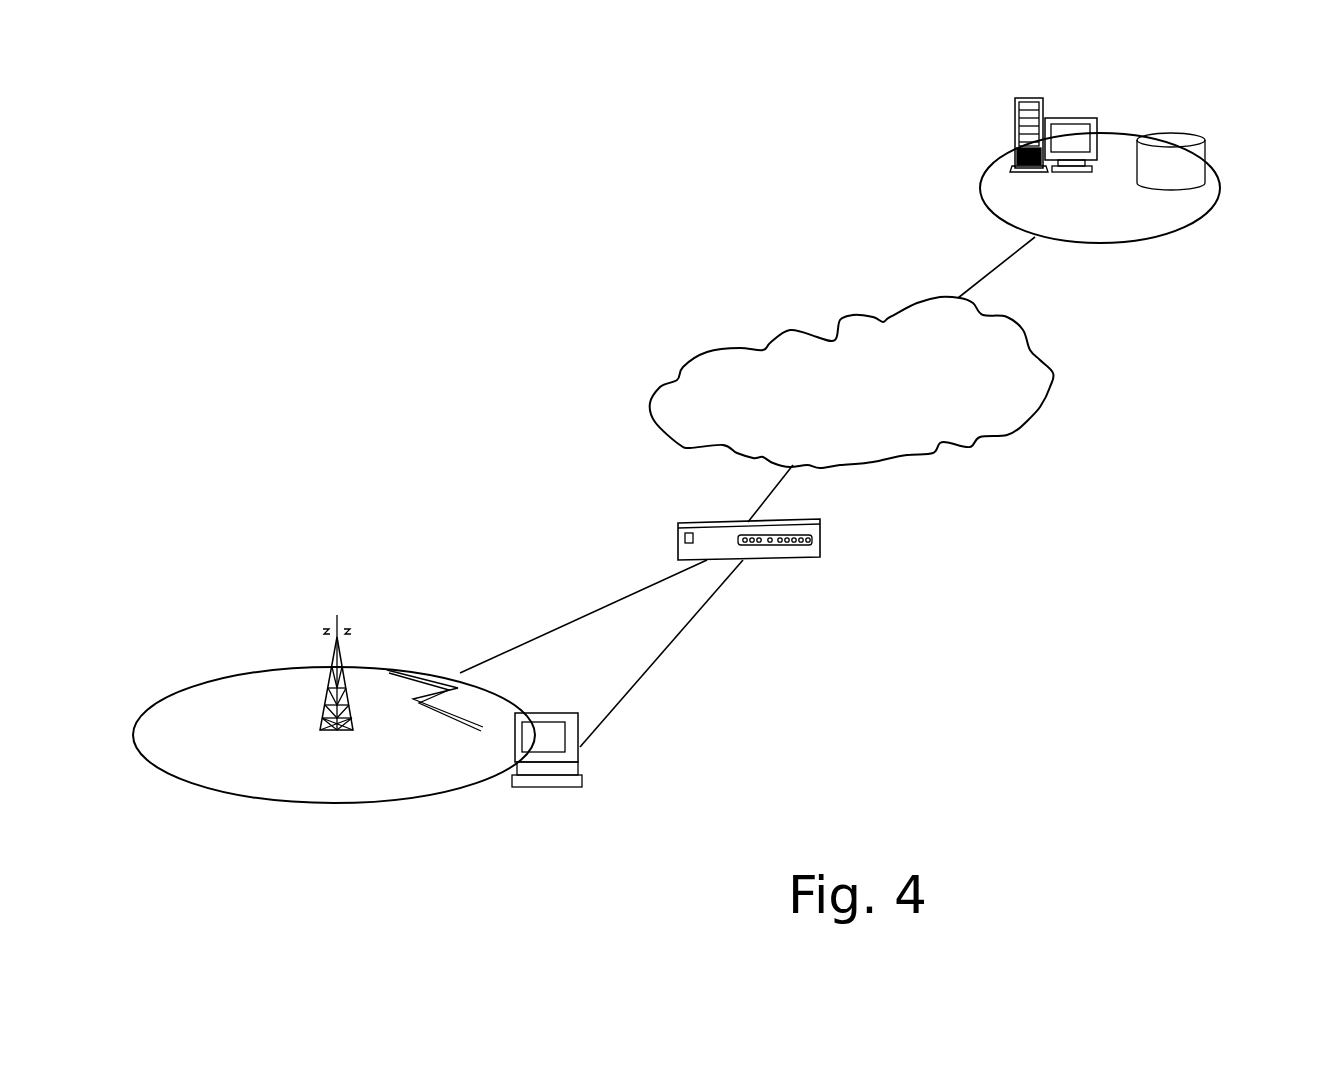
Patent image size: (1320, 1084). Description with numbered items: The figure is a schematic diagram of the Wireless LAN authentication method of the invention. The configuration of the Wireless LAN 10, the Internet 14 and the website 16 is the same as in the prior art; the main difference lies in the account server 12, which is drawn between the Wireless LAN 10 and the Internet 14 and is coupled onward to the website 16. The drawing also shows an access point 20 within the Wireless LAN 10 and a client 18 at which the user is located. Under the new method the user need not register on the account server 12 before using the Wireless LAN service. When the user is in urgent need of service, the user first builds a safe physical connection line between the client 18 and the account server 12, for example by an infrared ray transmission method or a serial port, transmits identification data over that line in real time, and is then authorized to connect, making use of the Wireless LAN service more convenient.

The Wireless LAN 10 is at (353, 863).
The account server 12 is at (878, 565).
The Internet 14 is at (1085, 433).
The website 16 is at (1205, 257).
The client 18 is at (580, 765).
The access point 20 is at (433, 773).